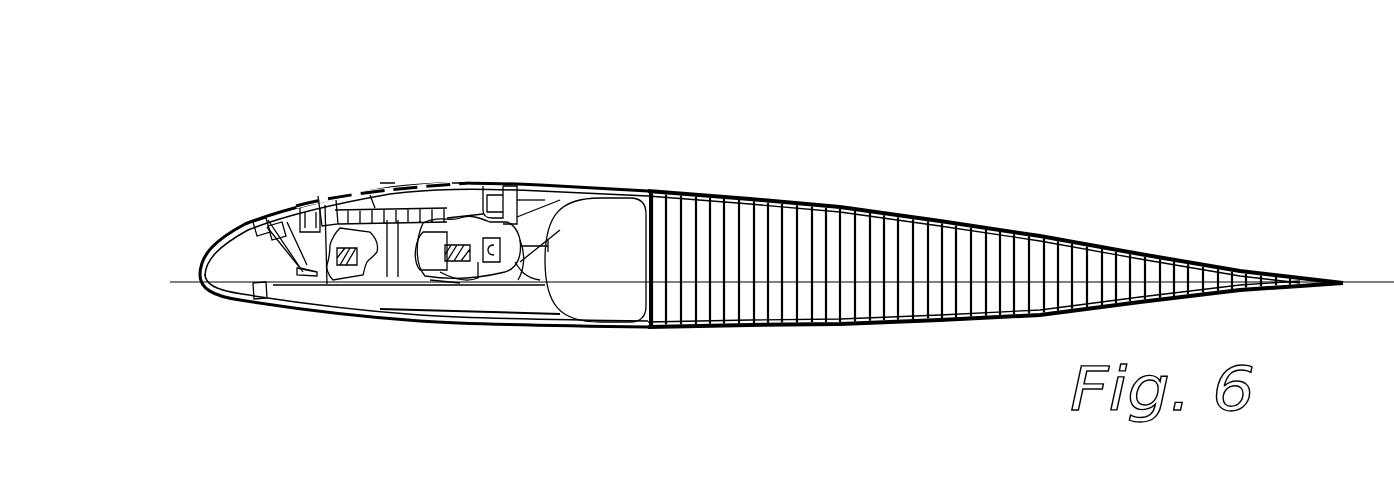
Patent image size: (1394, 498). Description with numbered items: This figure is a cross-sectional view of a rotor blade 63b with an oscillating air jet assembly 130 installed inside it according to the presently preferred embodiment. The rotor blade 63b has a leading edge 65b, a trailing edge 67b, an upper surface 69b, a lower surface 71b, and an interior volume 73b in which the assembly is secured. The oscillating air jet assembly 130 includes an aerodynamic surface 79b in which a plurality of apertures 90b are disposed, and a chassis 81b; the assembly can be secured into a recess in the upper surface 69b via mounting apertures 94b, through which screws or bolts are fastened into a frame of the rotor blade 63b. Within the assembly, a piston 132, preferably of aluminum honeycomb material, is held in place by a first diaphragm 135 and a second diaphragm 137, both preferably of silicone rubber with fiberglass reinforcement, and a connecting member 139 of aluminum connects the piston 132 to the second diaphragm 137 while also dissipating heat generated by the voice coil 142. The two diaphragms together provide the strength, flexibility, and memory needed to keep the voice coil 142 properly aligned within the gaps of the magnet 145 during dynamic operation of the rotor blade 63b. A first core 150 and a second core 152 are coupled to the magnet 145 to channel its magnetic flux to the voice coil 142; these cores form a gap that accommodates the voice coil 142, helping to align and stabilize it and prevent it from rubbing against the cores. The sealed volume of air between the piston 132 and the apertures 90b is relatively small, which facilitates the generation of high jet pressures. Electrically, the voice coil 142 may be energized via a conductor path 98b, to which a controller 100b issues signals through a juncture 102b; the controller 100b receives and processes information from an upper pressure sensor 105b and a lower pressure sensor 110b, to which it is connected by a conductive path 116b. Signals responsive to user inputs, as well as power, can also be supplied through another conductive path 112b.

The rotor blade 63b is at (1133, 250).
The leading edge 65b is at (200, 275).
The trailing edge 67b is at (1343, 282).
The upper surface 69b is at (822, 200).
The lower surface 71b is at (893, 325).
The interior volume 73b is at (624, 270).
The aerodynamic surface 79b is at (483, 186).
The chassis 81b is at (458, 282).
The apertures 90b is at (452, 183).
The mounting apertures 94b is at (278, 218).
The conductor path 98b is at (560, 200).
The controller 100b is at (540, 258).
The juncture 102b is at (560, 318).
The upper pressure sensor 105b is at (253, 222).
The lower pressure sensor 110b is at (256, 300).
The other conductive path 112b is at (533, 250).
The conductive path 116b is at (280, 313).
The oscillating air jet assembly 130 is at (497, 186).
The piston 132 is at (372, 192).
The first diaphragm 135 is at (333, 300).
The second diaphragm 137 is at (398, 282).
The connecting member 139 is at (357, 268).
The voice coil 142 is at (435, 272).
The magnet 145 is at (480, 265).
The first core 150 is at (320, 200).
The second core 152 is at (352, 205).